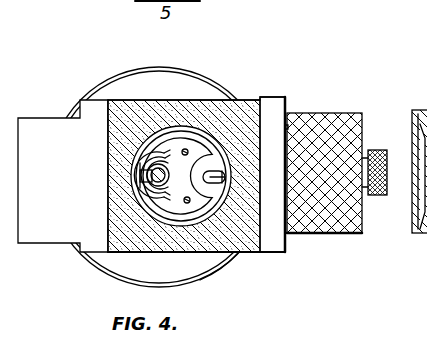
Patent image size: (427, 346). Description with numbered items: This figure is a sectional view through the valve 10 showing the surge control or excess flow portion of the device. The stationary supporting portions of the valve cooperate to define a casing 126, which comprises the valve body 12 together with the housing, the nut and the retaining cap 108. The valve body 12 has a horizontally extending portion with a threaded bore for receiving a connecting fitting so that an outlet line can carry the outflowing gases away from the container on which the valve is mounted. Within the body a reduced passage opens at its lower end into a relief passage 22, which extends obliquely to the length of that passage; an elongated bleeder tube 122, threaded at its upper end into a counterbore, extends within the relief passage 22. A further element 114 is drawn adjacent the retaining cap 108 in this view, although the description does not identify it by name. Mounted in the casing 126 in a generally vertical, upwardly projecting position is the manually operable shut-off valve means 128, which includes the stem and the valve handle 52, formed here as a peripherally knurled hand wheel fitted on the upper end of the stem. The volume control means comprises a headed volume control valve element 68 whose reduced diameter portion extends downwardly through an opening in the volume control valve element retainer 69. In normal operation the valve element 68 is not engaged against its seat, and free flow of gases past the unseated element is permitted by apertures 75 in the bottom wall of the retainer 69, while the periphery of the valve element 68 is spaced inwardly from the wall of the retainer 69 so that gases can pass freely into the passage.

The valve 10 is at (235, 92).
The valve body 12 is at (87, 108).
The relief passage 22 is at (225, 163).
The valve handle 52 is at (183, 70).
The volume control valve element 68 is at (140, 170).
The volume control valve element retainer 69 is at (138, 253).
The apertures 75 is at (137, 161).
The retaining cap 108 is at (319, 114).
The small block 114 is at (372, 150).
The bleeder tube 122 is at (286, 237).
The casing 126 is at (215, 84).
The shut-off valve means 128 is at (231, 261).